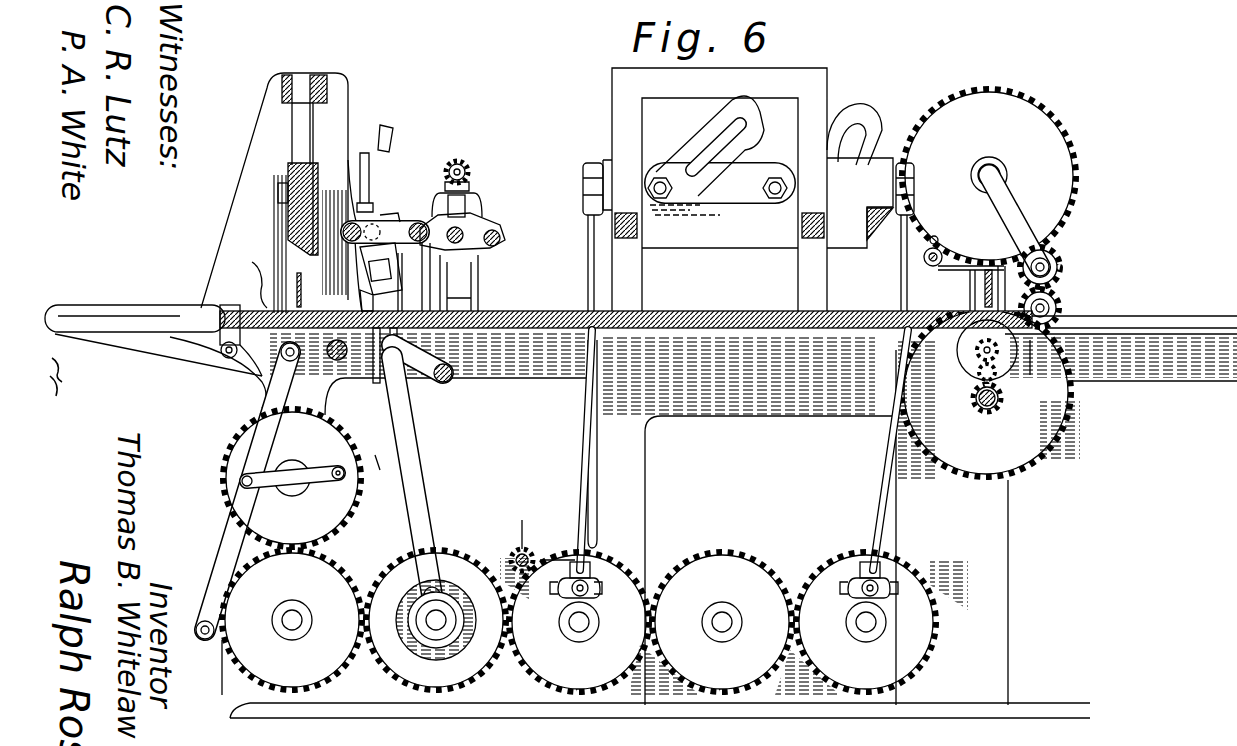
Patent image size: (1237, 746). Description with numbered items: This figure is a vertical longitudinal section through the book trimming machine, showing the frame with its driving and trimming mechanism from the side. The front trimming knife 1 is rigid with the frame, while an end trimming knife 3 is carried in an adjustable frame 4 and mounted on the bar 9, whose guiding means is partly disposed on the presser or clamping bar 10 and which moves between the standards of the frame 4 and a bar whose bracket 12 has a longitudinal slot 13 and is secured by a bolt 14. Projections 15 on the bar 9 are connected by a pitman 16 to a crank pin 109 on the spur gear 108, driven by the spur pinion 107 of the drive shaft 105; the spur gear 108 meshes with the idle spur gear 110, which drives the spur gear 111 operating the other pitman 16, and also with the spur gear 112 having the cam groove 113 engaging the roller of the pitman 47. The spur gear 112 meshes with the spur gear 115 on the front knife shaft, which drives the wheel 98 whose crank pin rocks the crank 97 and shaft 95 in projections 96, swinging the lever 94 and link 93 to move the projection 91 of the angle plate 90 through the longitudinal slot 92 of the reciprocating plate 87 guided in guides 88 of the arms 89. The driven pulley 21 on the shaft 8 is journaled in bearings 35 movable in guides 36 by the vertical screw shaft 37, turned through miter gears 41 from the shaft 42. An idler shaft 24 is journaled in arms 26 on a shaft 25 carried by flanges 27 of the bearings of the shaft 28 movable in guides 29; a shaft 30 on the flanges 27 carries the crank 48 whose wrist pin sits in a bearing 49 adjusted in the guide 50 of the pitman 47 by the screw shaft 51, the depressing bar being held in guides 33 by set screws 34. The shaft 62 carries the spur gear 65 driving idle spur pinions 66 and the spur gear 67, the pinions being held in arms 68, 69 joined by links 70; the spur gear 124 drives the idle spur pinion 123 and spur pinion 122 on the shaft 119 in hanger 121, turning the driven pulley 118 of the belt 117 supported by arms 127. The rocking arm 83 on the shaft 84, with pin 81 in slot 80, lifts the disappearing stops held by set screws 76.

The trimming knife 1 is at (296, 228).
The trimming knife 3 is at (872, 240).
The frame 4 is at (803, 68).
The shaft 8 is at (1005, 170).
The bar 9 is at (870, 165).
The presser or clamping bar 10 is at (717, 164).
The bracket 12 is at (626, 213).
The longitudinal slot 13 is at (1000, 165).
The bolt 14 is at (628, 238).
The projection 15 is at (588, 162).
The pitman 16 is at (585, 468).
The driven pulley 21 is at (409, 282).
The shaft 24 is at (342, 236).
The shaft 25 is at (385, 207).
The arm 26 is at (331, 273).
The flange 27 is at (470, 216).
The shaft 28 is at (465, 236).
The guide 29 is at (460, 282).
The shaft 30 is at (500, 240).
The guide 33 is at (958, 282).
The set screw 34 is at (938, 236).
The bearing 35 is at (962, 260).
The guide 36 is at (970, 300).
The vertical screw shaft 37 is at (960, 303).
The miter gear 41 is at (460, 162).
The shaft 42 is at (470, 173).
The pitman 47 is at (424, 480).
The crank 48 is at (392, 209).
The bearing 49 is at (390, 277).
The guide 50 is at (380, 270).
The crank-operated screw shaft 51 is at (370, 180).
The shaft 62 is at (990, 412).
The spur gear 65 is at (1070, 430).
The idle spur pinion 66 is at (1058, 280).
The spur gear 67 is at (1065, 212).
The arm 68 is at (1060, 316).
The arm 69 is at (1010, 204).
The link 70 is at (1050, 262).
The set screw 76 is at (418, 277).
The slot 80 is at (371, 366).
The pin 81 is at (344, 354).
The rocking arm 83 is at (425, 385).
The shaft 84 is at (453, 376).
The reciprocating plate 87 is at (253, 284).
The guide 88 is at (72, 305).
The arm 89 is at (112, 338).
The angle plate 90 is at (250, 310).
The projection 91 is at (160, 371).
The longitudinal slot 92 is at (165, 342).
The link 93 is at (232, 365).
The lever 94 is at (256, 452).
The shaft 95 is at (201, 642).
The projection 96 is at (210, 669).
The crank 97 is at (222, 543).
The wheel 98 is at (346, 480).
The drive shaft 105 is at (530, 552).
The spur pinion 107 is at (548, 531).
The spur gear 108 is at (579, 622).
The crank pin 109 is at (592, 594).
The idle spur gear 110 is at (722, 622).
The spur gear 111 is at (866, 622).
The spur gear 112 is at (436, 620).
The cam groove 113 is at (450, 590).
The spur gear 115 is at (292, 620).
The belt 117 is at (1178, 312).
The driven pulley 118 is at (965, 380).
The shaft 119 is at (1121, 343).
The hanger 121 is at (1041, 357).
The spur pinion 122 is at (980, 352).
The idle spur pinion 123 is at (954, 362).
The spur gear 124 is at (1011, 399).
The arm 127 is at (1152, 367).